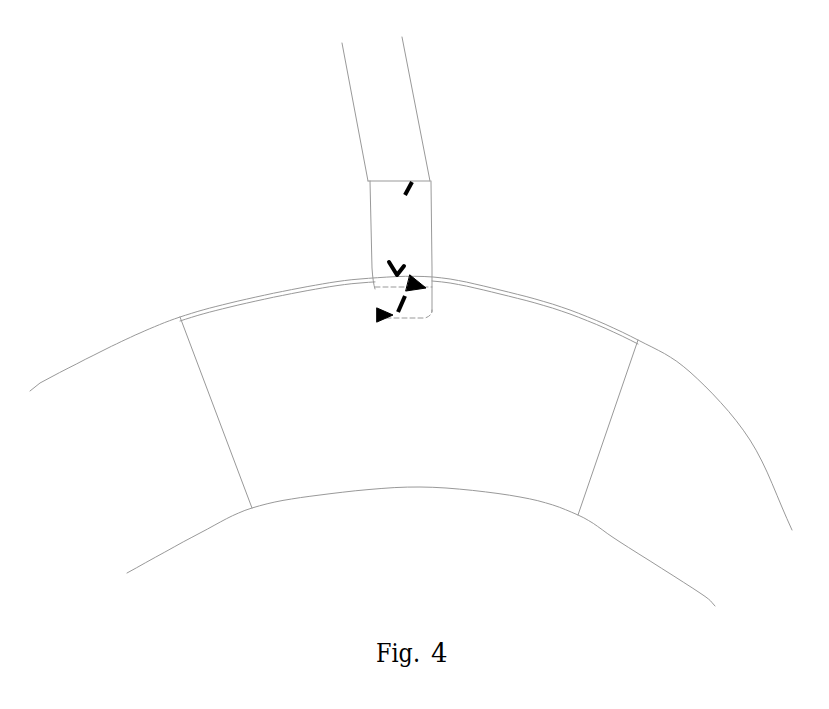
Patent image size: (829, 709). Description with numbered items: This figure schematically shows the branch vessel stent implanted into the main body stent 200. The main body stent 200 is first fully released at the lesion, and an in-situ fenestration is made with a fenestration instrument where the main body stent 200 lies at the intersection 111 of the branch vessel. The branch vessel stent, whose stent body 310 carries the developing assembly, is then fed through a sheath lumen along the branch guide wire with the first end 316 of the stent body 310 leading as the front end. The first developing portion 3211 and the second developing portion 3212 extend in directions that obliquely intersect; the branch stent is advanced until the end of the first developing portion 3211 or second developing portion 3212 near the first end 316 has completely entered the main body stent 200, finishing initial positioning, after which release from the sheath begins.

The main body stent 200 is at (273, 341).
The stent body 310 is at (388, 203).
The first developing portion 3211 is at (393, 262).
The second developing portion 3212 is at (408, 279).
The intersection 111 is at (420, 288).
The first end 316 is at (378, 314).